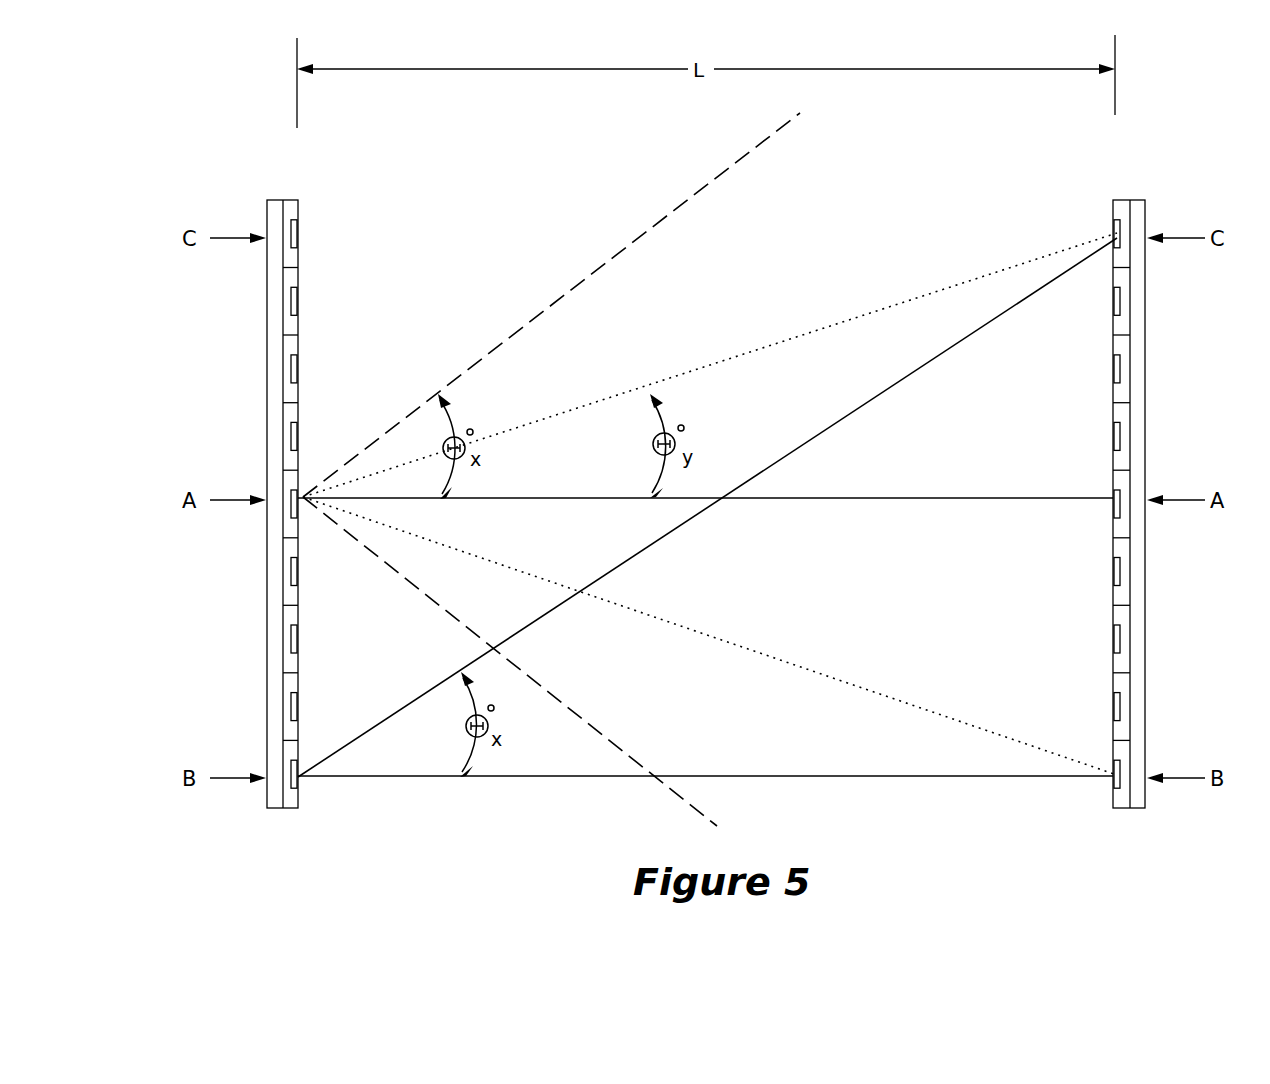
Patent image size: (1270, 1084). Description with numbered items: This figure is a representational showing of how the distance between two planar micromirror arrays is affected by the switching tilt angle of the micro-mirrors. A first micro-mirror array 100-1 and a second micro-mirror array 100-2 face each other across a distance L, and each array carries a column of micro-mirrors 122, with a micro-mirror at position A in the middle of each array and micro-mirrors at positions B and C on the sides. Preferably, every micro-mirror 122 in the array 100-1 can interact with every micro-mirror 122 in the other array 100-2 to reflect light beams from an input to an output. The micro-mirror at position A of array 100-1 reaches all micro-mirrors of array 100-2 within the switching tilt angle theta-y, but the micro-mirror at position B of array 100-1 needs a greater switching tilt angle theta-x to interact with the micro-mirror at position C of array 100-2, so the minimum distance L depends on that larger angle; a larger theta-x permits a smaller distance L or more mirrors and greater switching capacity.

The first micro-mirror array 100-1 is at (278, 185).
The second micro-mirror array 100-2 is at (1140, 185).
The micro-mirror 122 is at (342, 214).